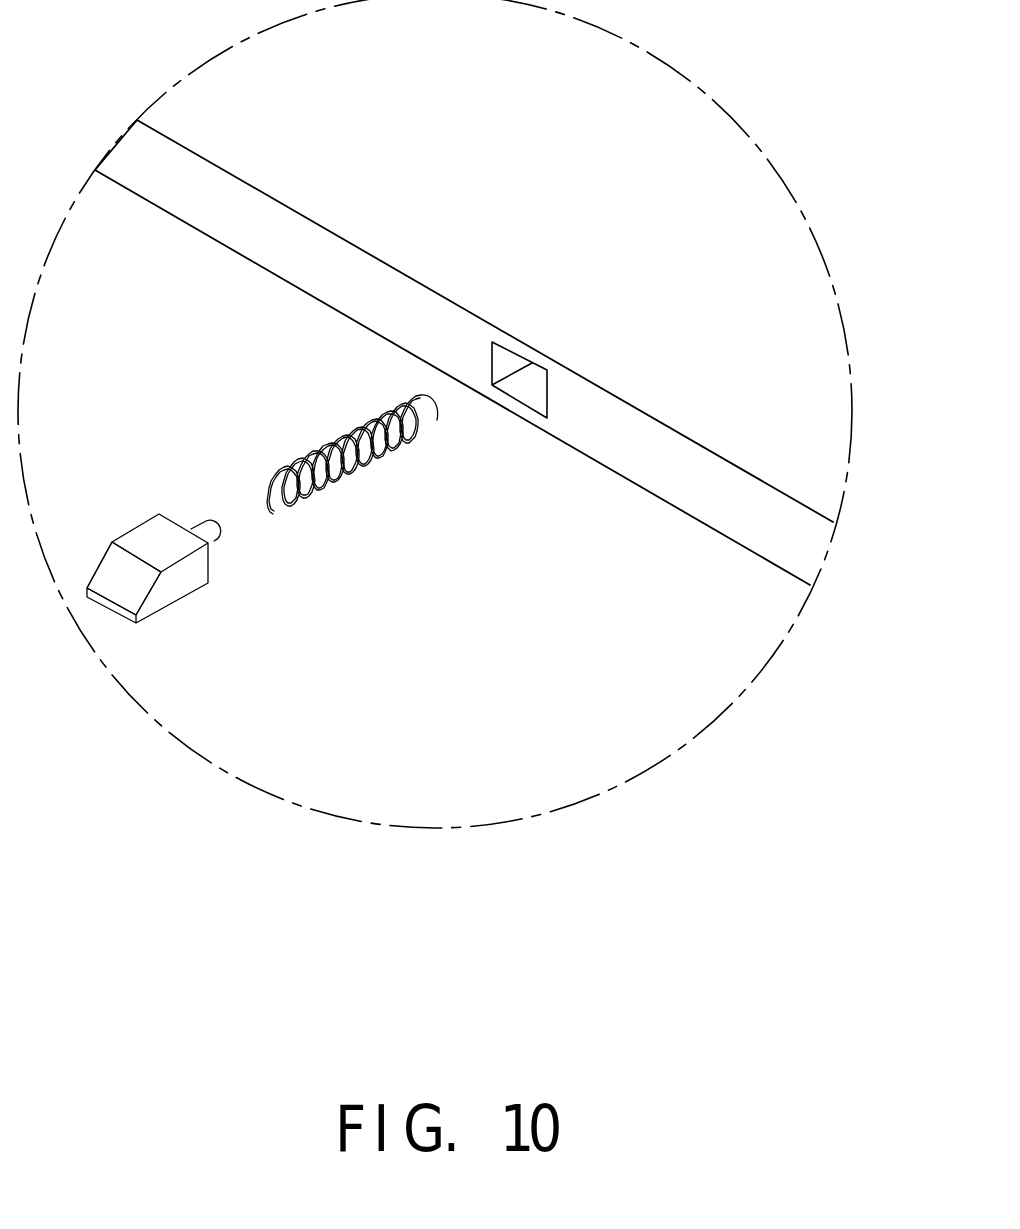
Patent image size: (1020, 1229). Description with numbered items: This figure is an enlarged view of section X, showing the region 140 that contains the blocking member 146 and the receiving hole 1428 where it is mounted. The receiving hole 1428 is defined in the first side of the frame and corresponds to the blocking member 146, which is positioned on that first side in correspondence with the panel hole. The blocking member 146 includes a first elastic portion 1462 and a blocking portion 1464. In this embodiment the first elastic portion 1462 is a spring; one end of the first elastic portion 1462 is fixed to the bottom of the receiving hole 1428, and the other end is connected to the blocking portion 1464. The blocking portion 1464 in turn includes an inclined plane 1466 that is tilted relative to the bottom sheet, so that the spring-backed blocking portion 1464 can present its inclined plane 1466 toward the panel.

The housing 140 is at (610, 175).
The receiving hole 1428 is at (528, 390).
The blocking member 146 is at (257, 567).
The first elastic portion 1462 is at (335, 478).
The blocking portion 1464 is at (182, 582).
The inclined plane 1466 is at (115, 570).